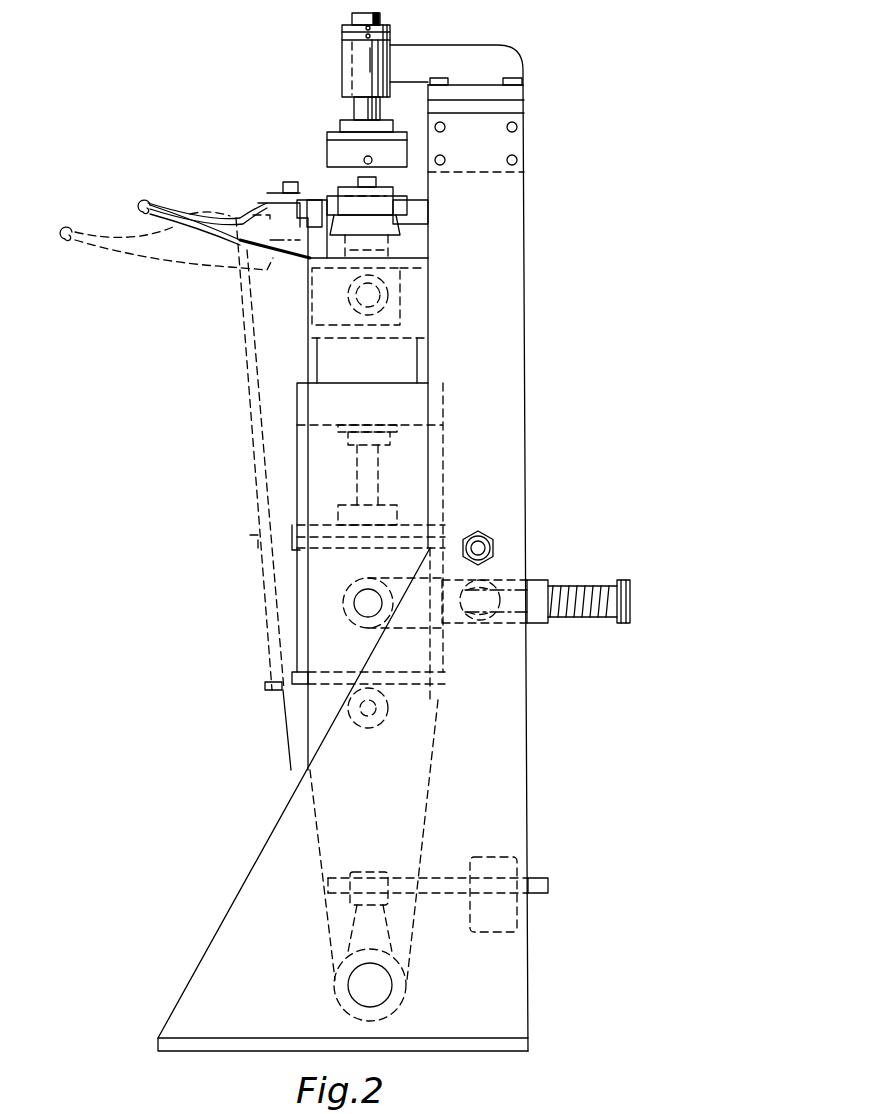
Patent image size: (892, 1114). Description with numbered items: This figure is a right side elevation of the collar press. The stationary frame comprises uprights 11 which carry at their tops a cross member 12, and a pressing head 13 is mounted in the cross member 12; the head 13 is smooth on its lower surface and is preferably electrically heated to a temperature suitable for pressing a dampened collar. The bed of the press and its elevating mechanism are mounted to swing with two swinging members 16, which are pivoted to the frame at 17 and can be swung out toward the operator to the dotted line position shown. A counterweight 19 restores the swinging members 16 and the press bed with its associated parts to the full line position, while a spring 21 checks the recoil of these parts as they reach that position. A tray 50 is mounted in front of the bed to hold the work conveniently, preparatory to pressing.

The uprights 11 is at (512, 383).
The cross member 12 is at (416, 53).
The pressing head 13 is at (328, 148).
The swinging members 16 is at (315, 713).
The pivot 17 is at (385, 987).
The counterweight 19 is at (500, 856).
The spring 21 is at (583, 612).
The tray 50 is at (165, 210).